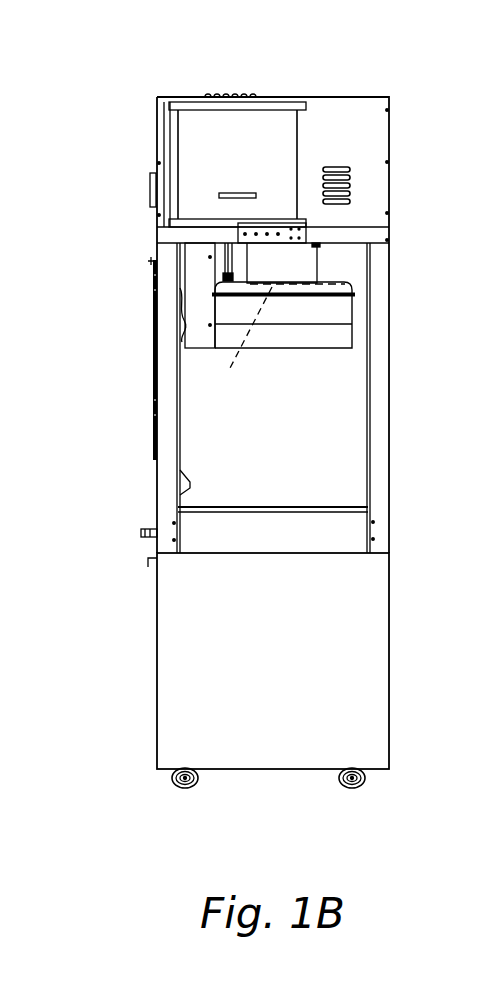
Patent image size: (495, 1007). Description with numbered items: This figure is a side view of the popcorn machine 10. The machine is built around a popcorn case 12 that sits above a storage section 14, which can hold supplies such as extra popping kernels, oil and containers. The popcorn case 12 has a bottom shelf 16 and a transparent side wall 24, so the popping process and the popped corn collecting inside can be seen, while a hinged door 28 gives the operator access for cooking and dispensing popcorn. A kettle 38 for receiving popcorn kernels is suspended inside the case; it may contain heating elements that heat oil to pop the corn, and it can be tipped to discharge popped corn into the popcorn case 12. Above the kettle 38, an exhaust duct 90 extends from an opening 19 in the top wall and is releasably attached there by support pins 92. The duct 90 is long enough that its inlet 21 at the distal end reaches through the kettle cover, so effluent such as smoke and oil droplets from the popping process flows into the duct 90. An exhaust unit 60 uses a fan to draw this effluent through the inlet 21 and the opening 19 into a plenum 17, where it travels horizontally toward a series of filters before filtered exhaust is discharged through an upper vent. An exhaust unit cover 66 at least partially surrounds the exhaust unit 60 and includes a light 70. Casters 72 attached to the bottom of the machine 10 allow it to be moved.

The popcorn machine 10 is at (132, 105).
The popcorn case 12 is at (380, 345).
The storage section 14 is at (360, 675).
The bottom shelf 16 is at (322, 510).
The plenum 17 is at (173, 237).
The opening 19 is at (313, 243).
The inlet 21 is at (243, 342).
The side wall 24 is at (350, 397).
The hinged door 28 is at (152, 383).
The kettle 38 is at (337, 312).
The exhaust unit 60 is at (282, 117).
The exhaust unit cover 66 is at (392, 120).
The light 70 is at (150, 187).
The casters 72 is at (365, 778).
The exhaust duct 90 is at (318, 263).
The support pins 92 is at (333, 243).